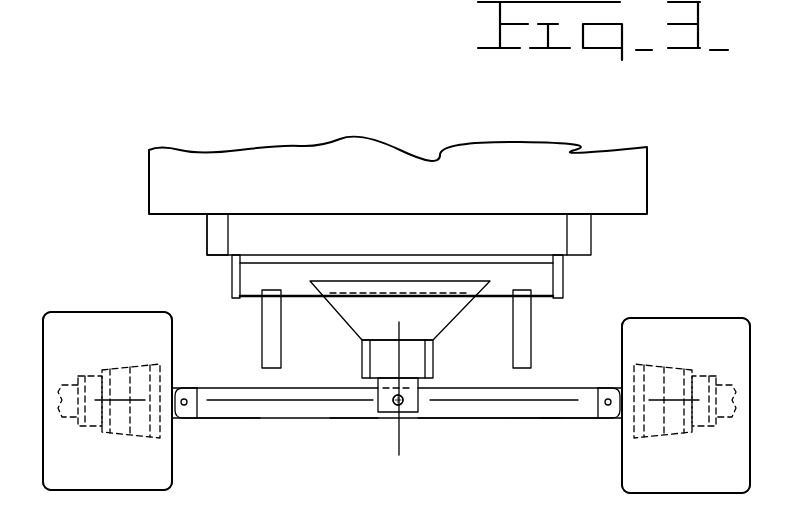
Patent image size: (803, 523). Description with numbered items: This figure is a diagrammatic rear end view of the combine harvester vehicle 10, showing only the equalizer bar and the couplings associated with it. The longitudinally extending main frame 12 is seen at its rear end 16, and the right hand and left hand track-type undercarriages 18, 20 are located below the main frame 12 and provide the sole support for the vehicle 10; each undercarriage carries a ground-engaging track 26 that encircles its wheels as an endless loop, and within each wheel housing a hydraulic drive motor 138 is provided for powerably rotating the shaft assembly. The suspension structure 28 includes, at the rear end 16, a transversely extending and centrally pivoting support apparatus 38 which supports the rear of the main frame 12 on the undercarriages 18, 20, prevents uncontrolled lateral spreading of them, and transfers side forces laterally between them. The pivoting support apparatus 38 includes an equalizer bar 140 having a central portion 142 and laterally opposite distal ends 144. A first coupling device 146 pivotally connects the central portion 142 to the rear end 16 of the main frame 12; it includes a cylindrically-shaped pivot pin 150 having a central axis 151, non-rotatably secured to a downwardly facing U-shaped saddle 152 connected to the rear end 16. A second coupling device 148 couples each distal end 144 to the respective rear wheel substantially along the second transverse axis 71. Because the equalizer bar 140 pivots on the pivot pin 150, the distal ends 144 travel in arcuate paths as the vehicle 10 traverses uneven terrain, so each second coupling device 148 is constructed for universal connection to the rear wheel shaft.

The combine harvester vehicle 10 is at (270, 145).
The main frame 12 is at (595, 234).
The rear end 16 is at (217, 231).
The right hand track-type undercarriage 18 is at (703, 314).
The left hand track-type undercarriage 20 is at (126, 311).
The ground-engaging track 26 is at (138, 318).
The suspension structure 28 is at (621, 265).
The pivoting support apparatus 38 is at (314, 437).
The second transverse axis 71 is at (275, 397).
The hydraulic drive motor 138 is at (120, 368).
The equalizer bar 140 is at (532, 419).
The central portion 142 is at (367, 412).
The distal ends 144 is at (204, 412).
The first coupling device 146 is at (388, 420).
The second coupling device 148 is at (181, 386).
The pivot pin 150 is at (394, 398).
The central axis 151 is at (404, 404).
The saddle 152 is at (412, 386).